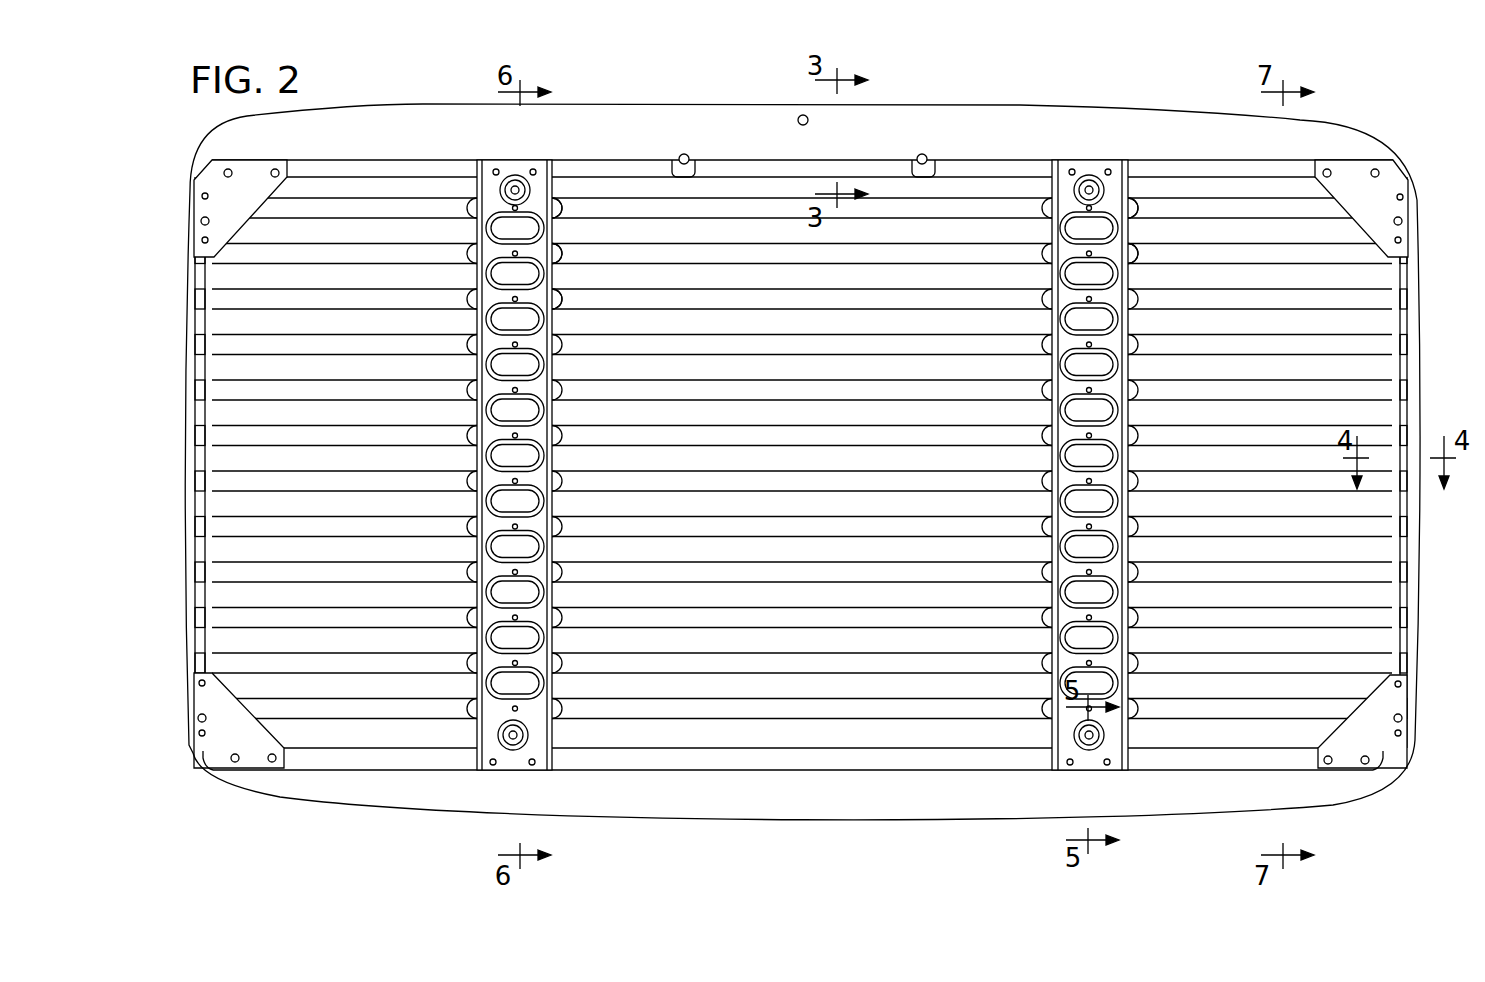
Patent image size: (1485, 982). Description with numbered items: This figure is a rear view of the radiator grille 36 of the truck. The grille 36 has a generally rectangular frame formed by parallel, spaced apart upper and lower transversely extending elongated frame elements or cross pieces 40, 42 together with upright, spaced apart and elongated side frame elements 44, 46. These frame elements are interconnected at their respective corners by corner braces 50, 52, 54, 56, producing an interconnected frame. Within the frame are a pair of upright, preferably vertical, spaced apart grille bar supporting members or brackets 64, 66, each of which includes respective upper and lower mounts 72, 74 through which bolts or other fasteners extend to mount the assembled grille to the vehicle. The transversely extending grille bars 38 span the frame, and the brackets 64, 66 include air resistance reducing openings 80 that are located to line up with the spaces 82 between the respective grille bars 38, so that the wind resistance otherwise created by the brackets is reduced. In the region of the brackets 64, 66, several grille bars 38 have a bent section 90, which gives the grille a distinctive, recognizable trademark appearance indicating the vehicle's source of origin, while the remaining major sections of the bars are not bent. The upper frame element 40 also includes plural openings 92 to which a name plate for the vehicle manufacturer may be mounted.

The grille 36 is at (1043, 95).
The grille bars 38 is at (981, 300).
The upper frame element 40 is at (677, 114).
The lower frame element 42 is at (678, 799).
The side frame element 44 is at (180, 498).
The side frame element 46 is at (1423, 364).
The corner brace 50 is at (231, 203).
The corner brace 52 is at (1360, 188).
The corner brace 54 is at (1383, 745).
The corner brace 56 is at (248, 752).
The grille bar supporting bracket 64 is at (488, 747).
The grille bar supporting bracket 66 is at (1060, 764).
The upper mount 72 is at (512, 180).
The lower mount 74 is at (513, 750).
The air resistance reducing openings 80 is at (527, 270).
The spaces between grille bars 82 is at (642, 272).
The bent section 90 is at (1143, 256).
The openings 92 is at (918, 156).